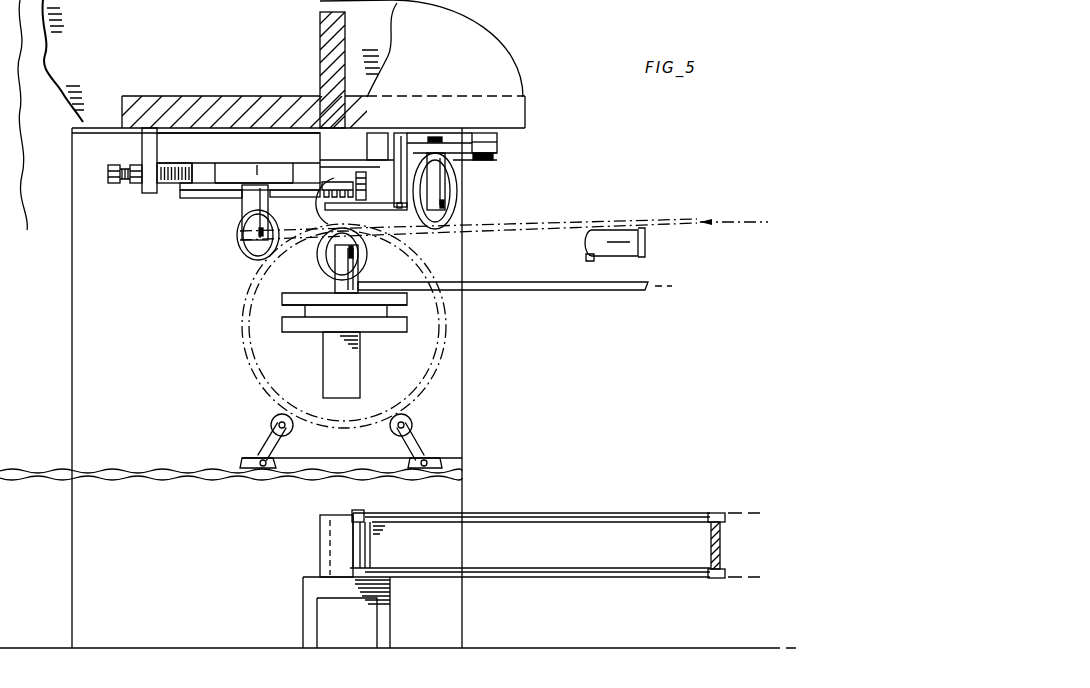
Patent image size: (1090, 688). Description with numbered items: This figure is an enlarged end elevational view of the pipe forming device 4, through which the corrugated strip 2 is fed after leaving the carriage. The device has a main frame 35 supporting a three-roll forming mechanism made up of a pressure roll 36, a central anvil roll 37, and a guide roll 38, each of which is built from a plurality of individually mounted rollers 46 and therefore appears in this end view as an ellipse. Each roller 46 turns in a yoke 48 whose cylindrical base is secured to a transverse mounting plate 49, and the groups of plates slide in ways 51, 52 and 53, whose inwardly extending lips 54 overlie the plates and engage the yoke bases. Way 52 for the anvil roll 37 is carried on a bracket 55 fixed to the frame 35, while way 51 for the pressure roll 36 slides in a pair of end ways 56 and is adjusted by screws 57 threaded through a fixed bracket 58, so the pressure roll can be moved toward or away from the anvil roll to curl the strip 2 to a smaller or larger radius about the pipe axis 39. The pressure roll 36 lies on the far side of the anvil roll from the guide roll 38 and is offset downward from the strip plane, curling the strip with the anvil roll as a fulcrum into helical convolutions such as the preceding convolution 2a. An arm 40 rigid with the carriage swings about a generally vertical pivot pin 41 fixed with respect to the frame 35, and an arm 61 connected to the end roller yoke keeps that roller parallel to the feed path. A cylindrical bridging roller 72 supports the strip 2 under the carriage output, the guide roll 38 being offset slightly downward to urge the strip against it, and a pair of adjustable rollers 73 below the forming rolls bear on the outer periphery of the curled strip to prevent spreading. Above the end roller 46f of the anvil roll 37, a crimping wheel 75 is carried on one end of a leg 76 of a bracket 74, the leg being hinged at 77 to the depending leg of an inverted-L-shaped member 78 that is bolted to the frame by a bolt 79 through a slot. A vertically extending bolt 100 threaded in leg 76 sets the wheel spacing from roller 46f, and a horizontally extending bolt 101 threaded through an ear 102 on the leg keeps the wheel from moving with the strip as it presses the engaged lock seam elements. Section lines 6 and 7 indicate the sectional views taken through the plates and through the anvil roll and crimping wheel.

The strip 2 is at (545, 226).
The preceding convolution 2a is at (435, 382).
The forming device 4 is at (552, 98).
The section line 6- 6 is at (240, 138).
The section line 7- 7 is at (163, 197).
The main frame 35 is at (459, 38).
The pressure roll 36 is at (228, 241).
The central anvil roll 37 is at (385, 255).
The guide roll 38 is at (468, 186).
The pipe axis 39 is at (345, 323).
The arm 40 is at (568, 518).
The pivot pin 41 is at (356, 513).
The rollers 46 is at (247, 258).
The end roller 46f is at (363, 247).
The yoke 48 is at (244, 198).
The mounting plate 49 is at (263, 182).
The way 51 is at (307, 170).
The way 52 is at (408, 318).
The way 53 is at (498, 139).
The lips 54 is at (276, 197).
The bracket 55 is at (357, 370).
The end ways 56 is at (172, 192).
The screws 57 is at (126, 188).
The fixed bracket 58 is at (142, 150).
The arm 61 is at (552, 290).
The bridging roller 72 is at (645, 236).
The adjustable rollers 73 is at (270, 424).
The bracket 74 is at (404, 118).
The crimping wheel 75 is at (320, 233).
The leg 76 is at (400, 210).
The hinge 77 is at (455, 212).
The inverted-L-shaped member 78 is at (413, 133).
The bolt 79 is at (437, 135).
The vertically extending bolt 100 is at (366, 182).
The horizontally extending bolt 101 is at (340, 182).
The ear 102 is at (356, 180).